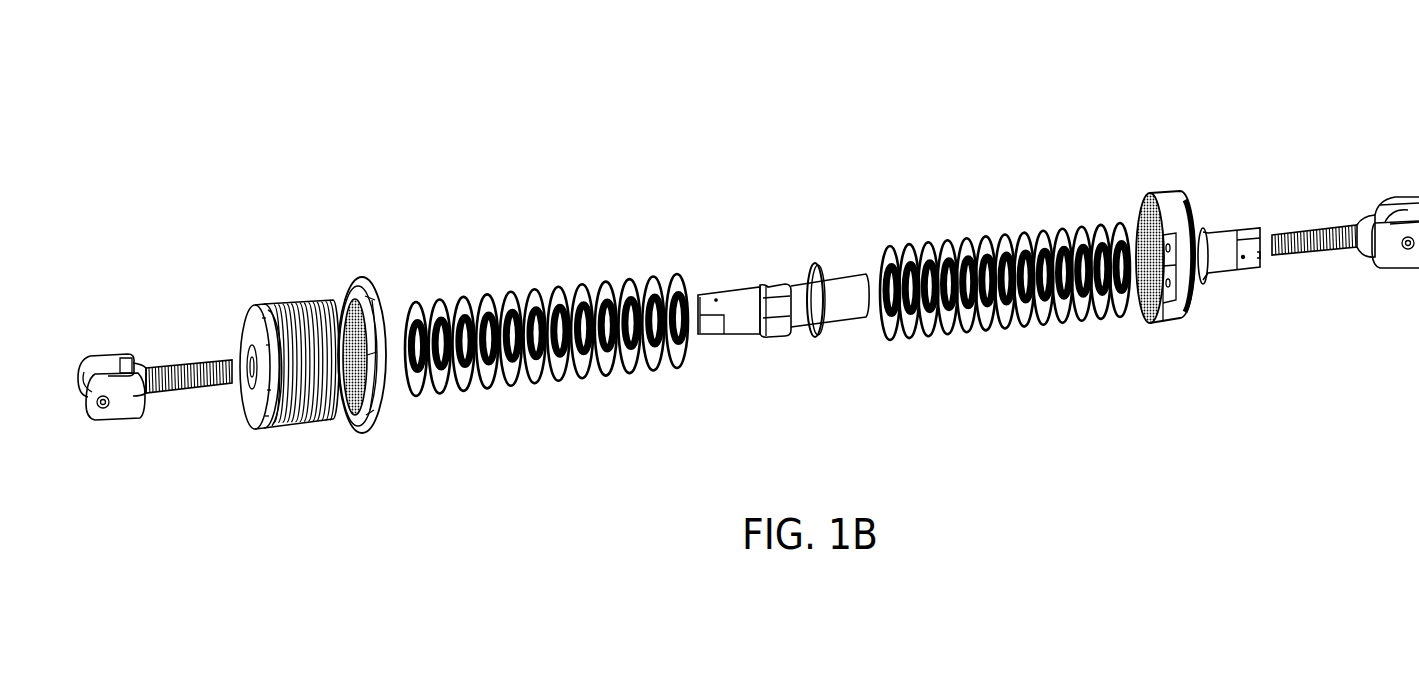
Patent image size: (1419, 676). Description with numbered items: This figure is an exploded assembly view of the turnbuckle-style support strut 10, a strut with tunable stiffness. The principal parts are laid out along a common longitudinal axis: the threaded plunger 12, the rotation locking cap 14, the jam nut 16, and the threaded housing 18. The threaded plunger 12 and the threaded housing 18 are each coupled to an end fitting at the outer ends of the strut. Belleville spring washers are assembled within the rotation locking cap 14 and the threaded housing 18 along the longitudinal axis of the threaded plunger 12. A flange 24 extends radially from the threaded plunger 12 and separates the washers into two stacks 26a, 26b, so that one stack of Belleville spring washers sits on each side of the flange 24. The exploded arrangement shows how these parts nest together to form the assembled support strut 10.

The turnbuckle-style support strut 10 is at (778, 138).
The threaded plunger 12 is at (765, 327).
The rotation locking cap 14 is at (290, 305).
The jam nut 16 is at (352, 290).
The threaded housing 18 is at (1180, 192).
The flange 24 is at (812, 264).
The first stack of Belleville spring washers 26a is at (548, 410).
The second stack of Belleville spring washers 26b is at (1021, 346).